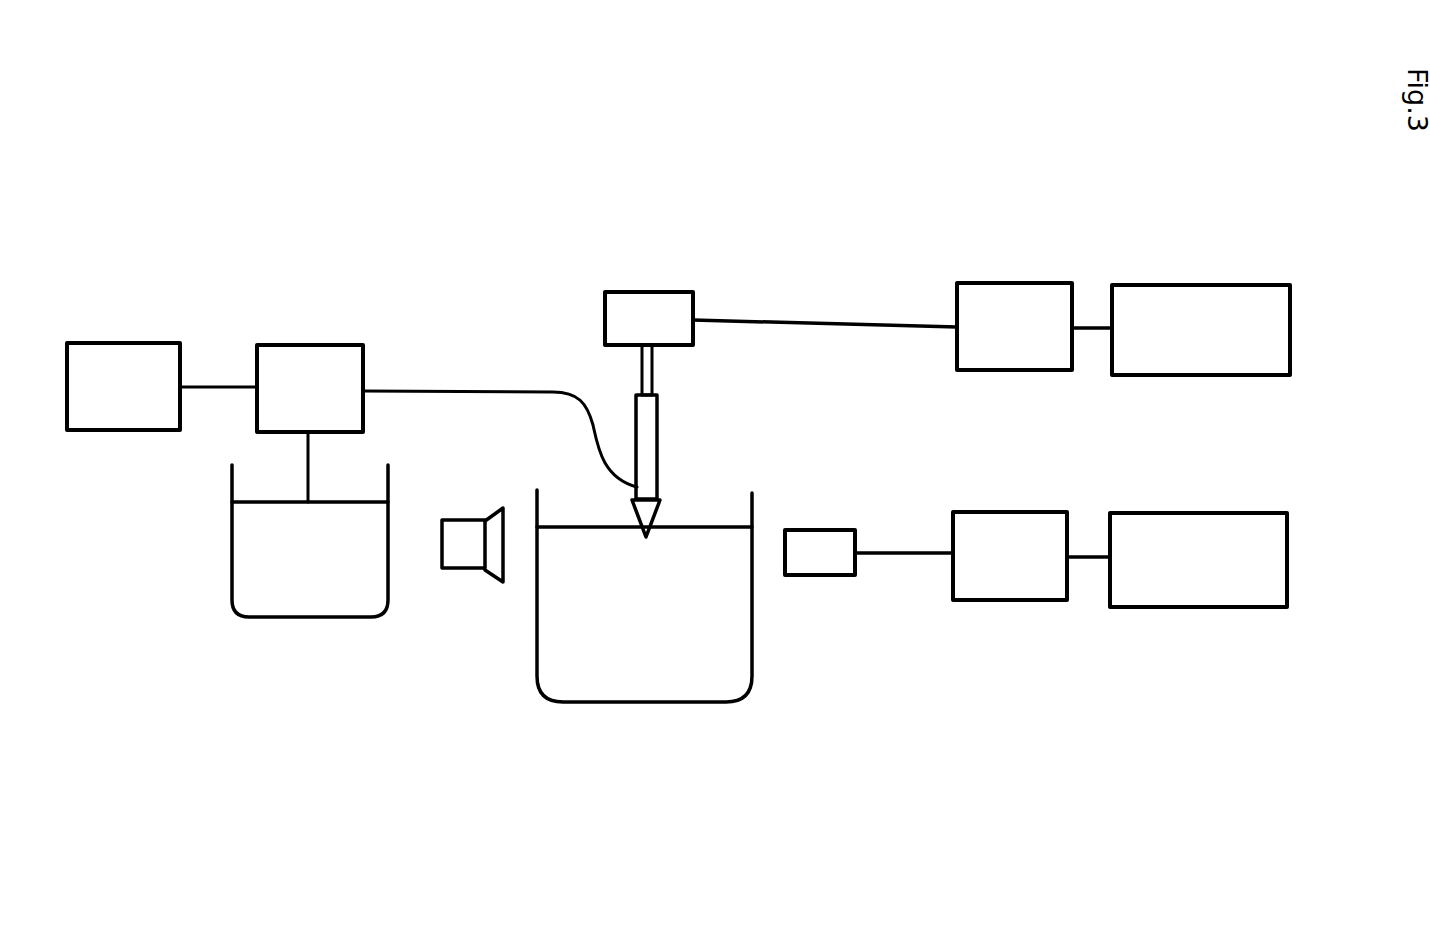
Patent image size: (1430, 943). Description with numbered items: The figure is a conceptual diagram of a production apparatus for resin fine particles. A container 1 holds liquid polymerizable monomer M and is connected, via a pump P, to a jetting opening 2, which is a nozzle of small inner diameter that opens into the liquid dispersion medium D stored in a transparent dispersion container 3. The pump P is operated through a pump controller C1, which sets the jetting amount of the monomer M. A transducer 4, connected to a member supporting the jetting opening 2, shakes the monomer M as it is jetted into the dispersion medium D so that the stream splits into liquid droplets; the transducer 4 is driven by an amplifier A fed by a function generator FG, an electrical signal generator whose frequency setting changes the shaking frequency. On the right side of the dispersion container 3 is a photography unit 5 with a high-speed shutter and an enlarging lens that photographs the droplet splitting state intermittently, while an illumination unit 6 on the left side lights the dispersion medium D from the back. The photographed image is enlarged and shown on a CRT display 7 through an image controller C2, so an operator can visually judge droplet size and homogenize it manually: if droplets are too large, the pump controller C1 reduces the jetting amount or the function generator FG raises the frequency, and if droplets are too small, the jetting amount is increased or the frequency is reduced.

The container for liquid polymerizable monomer 1 is at (228, 590).
The jetting opening 2 is at (657, 495).
The dispersion container 3 is at (737, 697).
The transducer 4 is at (632, 307).
The photography unit 5 is at (827, 562).
The illumination unit 6 is at (465, 558).
The CRT display 7 is at (1198, 560).
The liquid polymerizable monomer M is at (275, 550).
The liquid dispersion medium D is at (653, 675).
The pump controller C1 is at (123, 386).
The pump P is at (310, 388).
The amplifier A is at (1014, 326).
The function generator FG is at (1201, 330).
The image controller C2 is at (1010, 556).